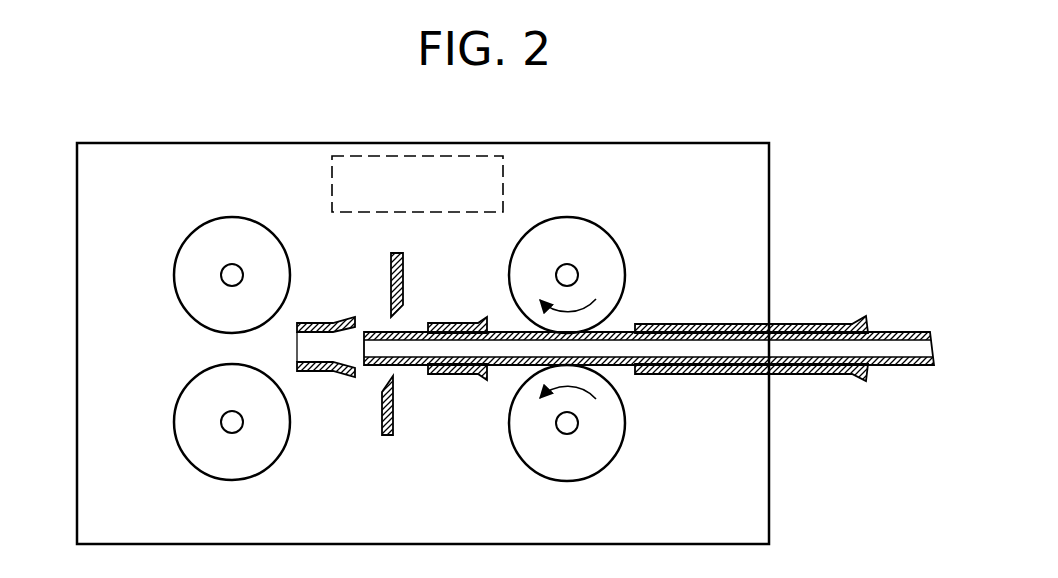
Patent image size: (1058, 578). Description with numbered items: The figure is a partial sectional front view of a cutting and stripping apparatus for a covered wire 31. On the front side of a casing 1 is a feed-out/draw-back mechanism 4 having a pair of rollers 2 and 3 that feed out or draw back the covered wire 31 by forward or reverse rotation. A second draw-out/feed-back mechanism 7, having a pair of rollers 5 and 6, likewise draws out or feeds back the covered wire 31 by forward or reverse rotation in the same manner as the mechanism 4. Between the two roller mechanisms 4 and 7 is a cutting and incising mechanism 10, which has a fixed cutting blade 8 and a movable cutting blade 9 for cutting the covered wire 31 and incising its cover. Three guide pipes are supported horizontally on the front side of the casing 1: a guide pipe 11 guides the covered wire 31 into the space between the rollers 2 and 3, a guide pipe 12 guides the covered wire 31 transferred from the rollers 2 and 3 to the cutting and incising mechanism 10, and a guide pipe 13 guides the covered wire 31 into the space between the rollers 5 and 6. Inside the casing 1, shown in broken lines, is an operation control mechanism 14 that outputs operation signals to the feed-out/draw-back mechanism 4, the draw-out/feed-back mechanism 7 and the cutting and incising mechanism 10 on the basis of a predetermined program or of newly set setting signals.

The casing 1 is at (750, 205).
The roller 2 is at (602, 252).
The roller 3 is at (605, 440).
The feed-out/draw-back mechanism 4 is at (603, 198).
The roller 5 is at (248, 230).
The roller 6 is at (275, 441).
The draw-out/feed-back mechanism 7 is at (166, 216).
The fixed cutting blade 8 is at (392, 420).
The movable cutting blade 9 is at (404, 279).
The cutting and incising mechanism 10 is at (403, 238).
The guide pipe 11 is at (697, 326).
The guide pipe 12 is at (468, 324).
The guide pipe 13 is at (322, 322).
The operation control mechanism 14 is at (404, 154).
The covered wire 31 is at (903, 330).